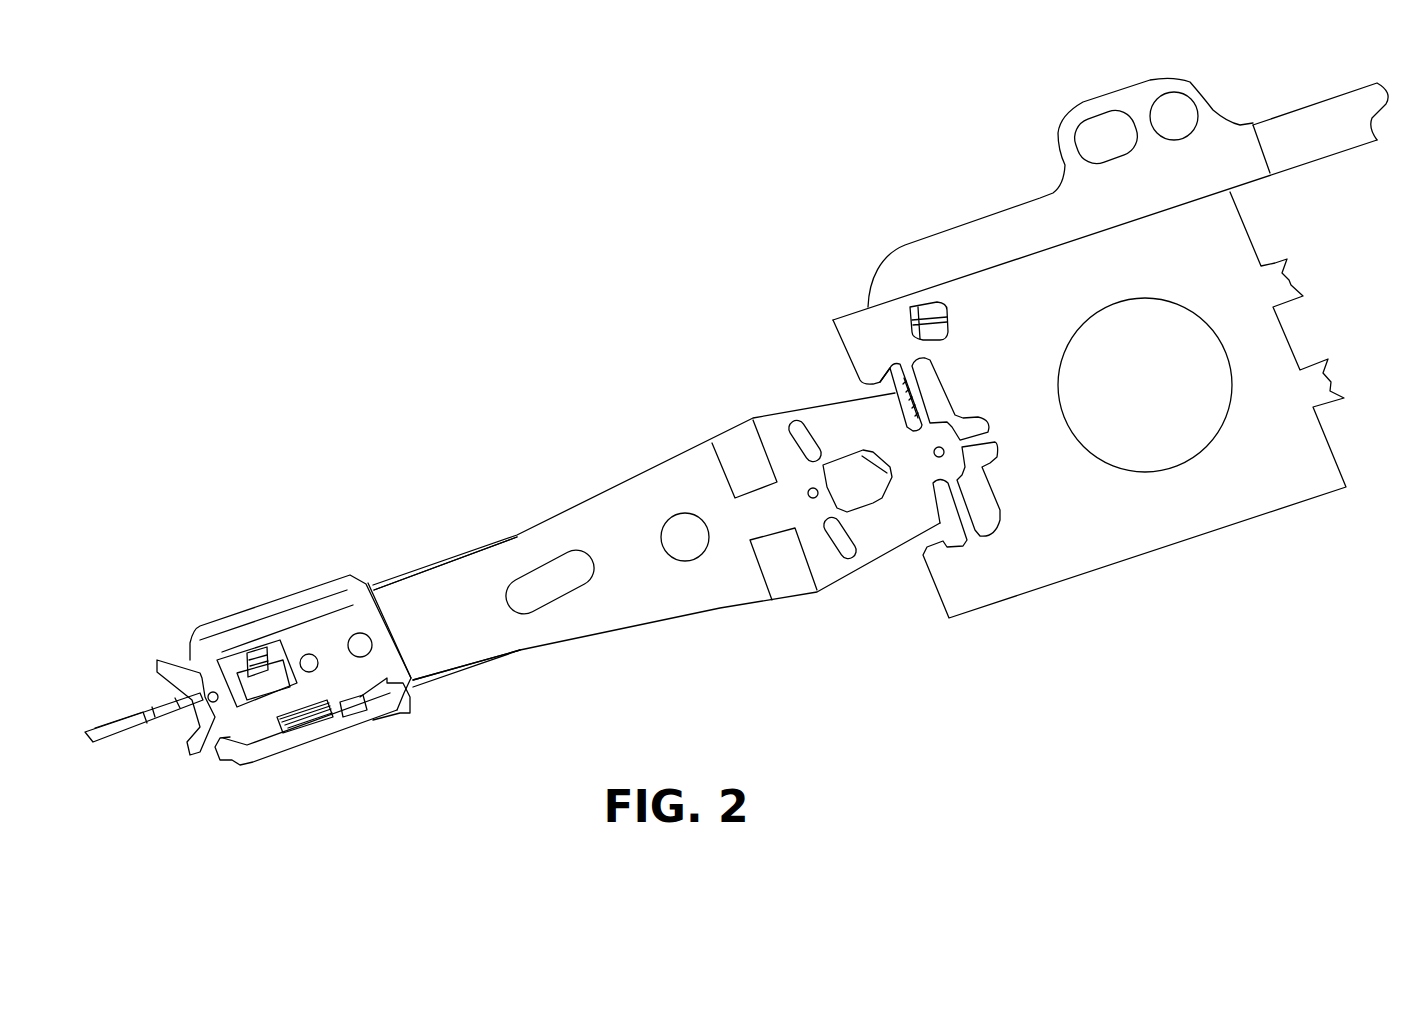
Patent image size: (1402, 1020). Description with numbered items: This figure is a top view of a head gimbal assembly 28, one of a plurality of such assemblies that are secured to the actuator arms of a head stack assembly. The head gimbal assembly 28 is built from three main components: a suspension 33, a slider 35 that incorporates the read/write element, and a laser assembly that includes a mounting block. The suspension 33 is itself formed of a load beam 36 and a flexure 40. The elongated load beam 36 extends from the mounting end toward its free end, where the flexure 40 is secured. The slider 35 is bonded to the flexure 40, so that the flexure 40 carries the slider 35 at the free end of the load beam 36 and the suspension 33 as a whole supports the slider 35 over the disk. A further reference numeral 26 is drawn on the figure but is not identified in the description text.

The head gimbal assembly 28 is at (736, 421).
The suspension 33 is at (632, 636).
The load beam 36 is at (730, 597).
The slider 26 is at (225, 663).
The slider 35 is at (258, 677).
The flexure 40 is at (202, 645).